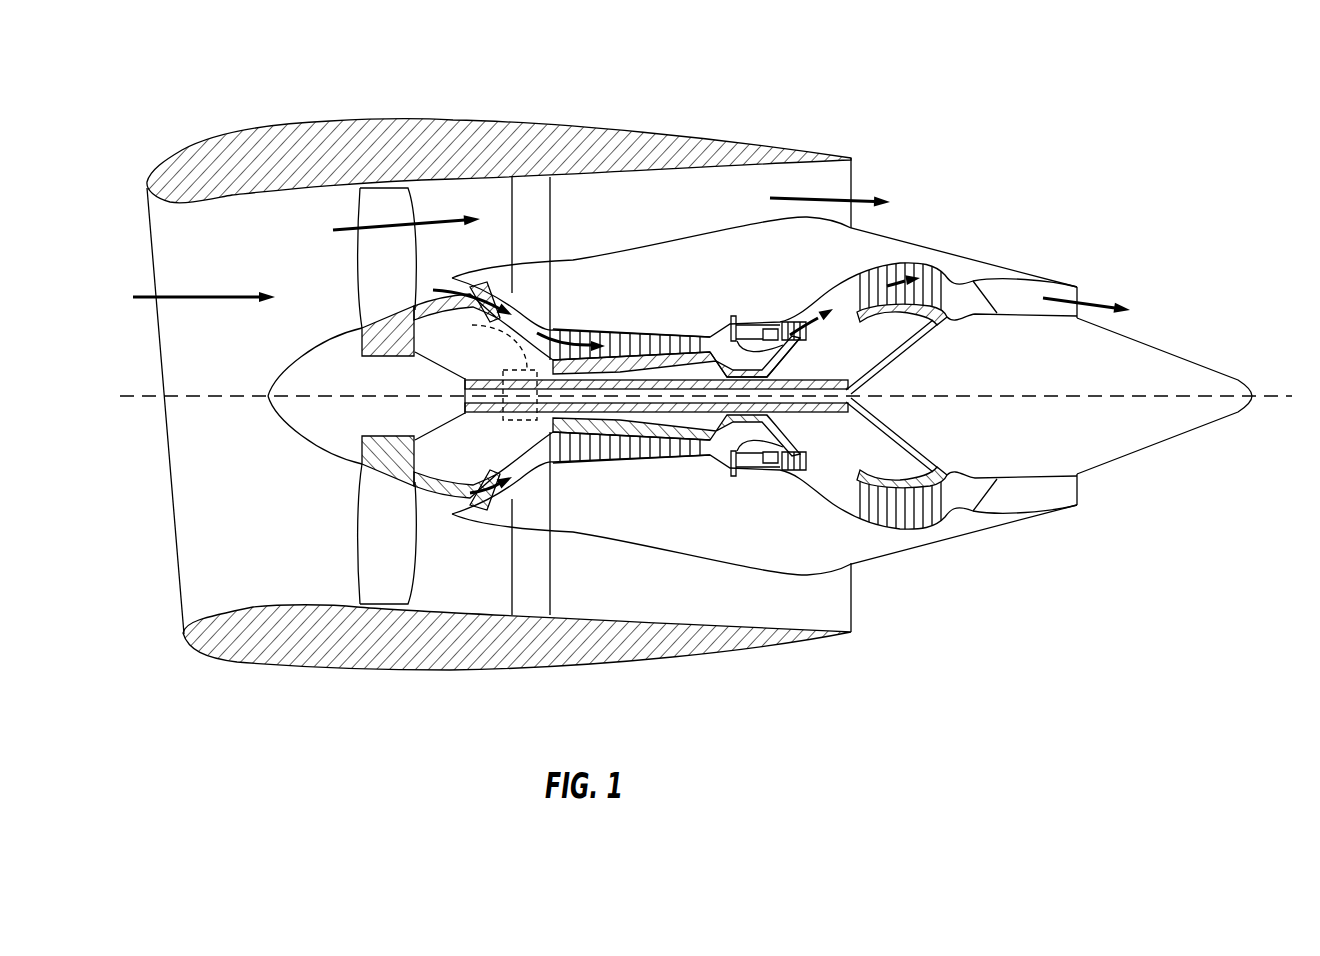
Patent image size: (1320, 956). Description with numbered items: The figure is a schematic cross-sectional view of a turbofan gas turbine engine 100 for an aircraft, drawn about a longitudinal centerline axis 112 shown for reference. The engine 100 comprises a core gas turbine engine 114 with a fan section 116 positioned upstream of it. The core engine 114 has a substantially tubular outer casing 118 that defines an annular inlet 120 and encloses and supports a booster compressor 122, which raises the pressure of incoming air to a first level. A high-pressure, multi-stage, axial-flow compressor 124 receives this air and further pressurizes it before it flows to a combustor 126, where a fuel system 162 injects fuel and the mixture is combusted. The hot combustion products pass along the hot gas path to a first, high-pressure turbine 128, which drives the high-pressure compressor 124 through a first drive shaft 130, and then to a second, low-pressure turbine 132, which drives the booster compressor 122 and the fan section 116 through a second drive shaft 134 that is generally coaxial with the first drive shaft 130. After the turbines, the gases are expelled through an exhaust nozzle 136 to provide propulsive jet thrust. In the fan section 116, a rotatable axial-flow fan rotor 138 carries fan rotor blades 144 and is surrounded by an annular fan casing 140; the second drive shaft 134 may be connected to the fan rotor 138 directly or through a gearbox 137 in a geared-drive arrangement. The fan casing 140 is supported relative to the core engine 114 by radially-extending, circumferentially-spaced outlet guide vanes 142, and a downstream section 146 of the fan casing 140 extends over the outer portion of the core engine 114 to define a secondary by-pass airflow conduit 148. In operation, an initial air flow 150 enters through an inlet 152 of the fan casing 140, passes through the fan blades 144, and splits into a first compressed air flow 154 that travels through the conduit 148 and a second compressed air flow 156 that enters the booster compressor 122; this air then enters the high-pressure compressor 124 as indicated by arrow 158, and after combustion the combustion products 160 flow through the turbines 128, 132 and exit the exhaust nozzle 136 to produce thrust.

The gas turbine engine 100 is at (1000, 147).
The centerline axis 112 is at (1000, 395).
The core gas turbine engine 114 is at (703, 278).
The fan section 116 is at (400, 112).
The outer casing 118 is at (693, 560).
The annular inlet 120 is at (448, 508).
The booster compressor 122 is at (508, 482).
The high-pressure compressor 124 is at (578, 457).
The combustor 126 is at (753, 462).
The first turbine 128 is at (815, 465).
The first drive shaft 130 is at (778, 366).
The second turbine 132 is at (1000, 512).
The second drive shaft 134 is at (513, 370).
The exhaust nozzle 136 is at (1080, 290).
The gearbox 137 is at (482, 338).
The fan rotor 138 is at (412, 357).
The fan casing 140 is at (397, 670).
The outlet guide vanes 142 is at (550, 190).
The fan rotor blades 144 is at (357, 540).
The downstream section 146 is at (740, 142).
The by-pass airflow conduit 148 is at (690, 221).
The initial air flow 150 is at (203, 297).
The inlet 152 is at (176, 592).
The first compressed air flow 154 is at (372, 222).
The second compressed air flow 156 is at (437, 288).
The air flow into high-pressure compressor 158 is at (567, 327).
The combustion products 160 is at (792, 318).
The fuel system 162 is at (733, 314).